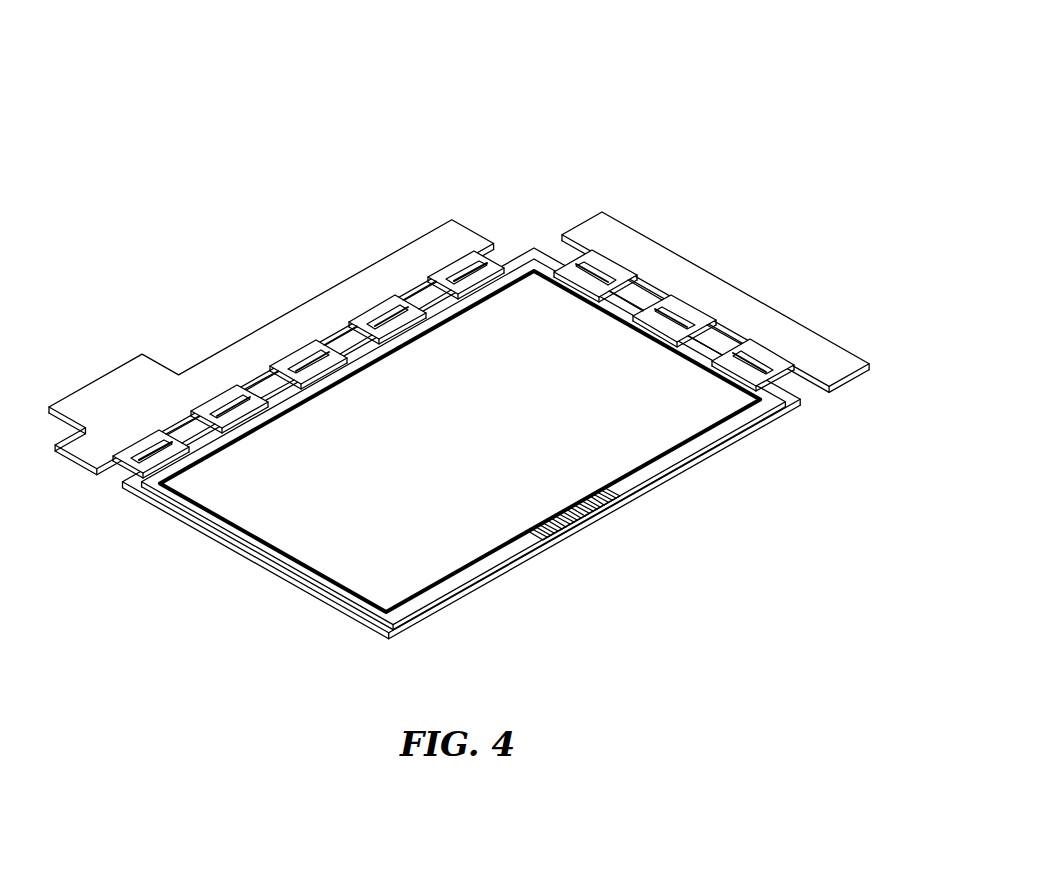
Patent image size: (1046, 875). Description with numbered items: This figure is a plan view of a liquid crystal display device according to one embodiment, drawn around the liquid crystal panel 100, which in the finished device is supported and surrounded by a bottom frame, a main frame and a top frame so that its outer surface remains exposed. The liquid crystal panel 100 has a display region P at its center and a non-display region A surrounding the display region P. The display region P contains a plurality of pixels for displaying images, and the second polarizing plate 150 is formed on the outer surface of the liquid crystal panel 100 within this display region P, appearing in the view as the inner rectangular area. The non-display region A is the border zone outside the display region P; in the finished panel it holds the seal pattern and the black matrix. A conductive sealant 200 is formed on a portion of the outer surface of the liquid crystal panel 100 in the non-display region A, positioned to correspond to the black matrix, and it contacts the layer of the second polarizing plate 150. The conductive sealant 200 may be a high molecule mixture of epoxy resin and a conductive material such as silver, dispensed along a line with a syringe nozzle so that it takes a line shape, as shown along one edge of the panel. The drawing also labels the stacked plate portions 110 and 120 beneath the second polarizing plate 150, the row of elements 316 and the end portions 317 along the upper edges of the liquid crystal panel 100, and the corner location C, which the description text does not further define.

The liquid crystal panel 100 is at (649, 167).
The substrate 110 is at (375, 636).
The display panel plate 120 is at (372, 617).
The second polarizing plate 150 is at (290, 538).
The conductive sealant 200 is at (590, 508).
The pad 316 is at (470, 262).
The tab 317 is at (89, 385).
The non-display region A is at (651, 474).
The display region P is at (652, 439).
The corner C is at (795, 417).